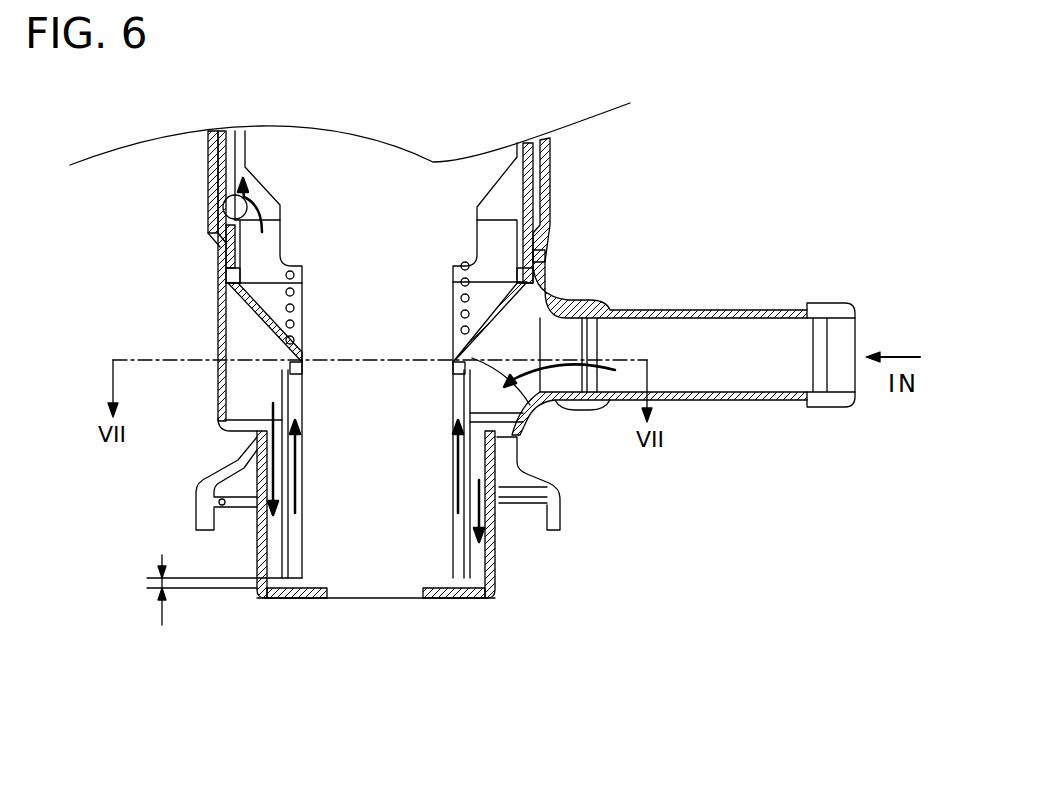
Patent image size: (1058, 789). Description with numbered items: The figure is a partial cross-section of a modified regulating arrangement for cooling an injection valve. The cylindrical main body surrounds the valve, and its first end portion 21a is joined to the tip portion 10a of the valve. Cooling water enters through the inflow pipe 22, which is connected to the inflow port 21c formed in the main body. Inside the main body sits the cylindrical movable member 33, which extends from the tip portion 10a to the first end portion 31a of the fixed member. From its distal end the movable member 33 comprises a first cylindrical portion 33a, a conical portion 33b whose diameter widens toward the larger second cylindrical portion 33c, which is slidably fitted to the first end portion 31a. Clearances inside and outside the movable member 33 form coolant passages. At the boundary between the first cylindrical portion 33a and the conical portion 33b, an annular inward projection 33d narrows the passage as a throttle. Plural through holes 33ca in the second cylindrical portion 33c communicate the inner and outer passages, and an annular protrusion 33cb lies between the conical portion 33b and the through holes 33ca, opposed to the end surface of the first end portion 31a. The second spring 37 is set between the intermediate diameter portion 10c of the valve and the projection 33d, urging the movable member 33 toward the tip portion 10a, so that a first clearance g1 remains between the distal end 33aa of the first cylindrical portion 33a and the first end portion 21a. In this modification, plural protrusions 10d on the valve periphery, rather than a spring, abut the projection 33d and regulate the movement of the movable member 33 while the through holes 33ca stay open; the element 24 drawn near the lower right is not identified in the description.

The tip portion 10a is at (378, 573).
The intermediate diameter portion 10c is at (500, 200).
The protrusions 10d is at (282, 408).
The first end portion 21a is at (440, 592).
The inflow port 21c is at (560, 297).
The inflow pipe 22 is at (757, 310).
The engaging hook 24 is at (545, 483).
The first end portion 31a is at (527, 213).
The movable member 33 is at (282, 397).
The first cylindrical portion 33a is at (285, 523).
The distal end 33aa is at (470, 592).
The conical portion 33b is at (248, 327).
The second cylindrical portion 33c is at (223, 205).
The through holes 33ca is at (228, 263).
The protrusion 33cb is at (533, 260).
The projection 33d is at (497, 373).
The second spring 37 is at (278, 265).
The first clearance g1 is at (213, 590).